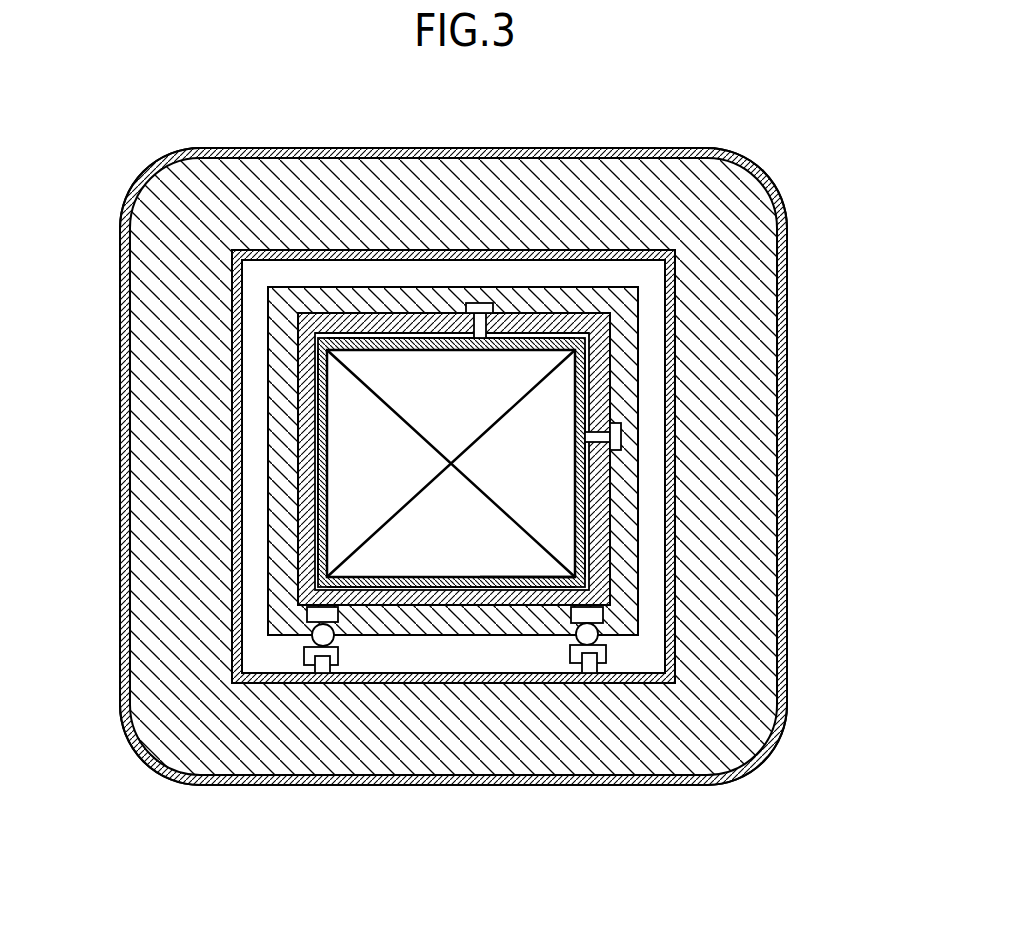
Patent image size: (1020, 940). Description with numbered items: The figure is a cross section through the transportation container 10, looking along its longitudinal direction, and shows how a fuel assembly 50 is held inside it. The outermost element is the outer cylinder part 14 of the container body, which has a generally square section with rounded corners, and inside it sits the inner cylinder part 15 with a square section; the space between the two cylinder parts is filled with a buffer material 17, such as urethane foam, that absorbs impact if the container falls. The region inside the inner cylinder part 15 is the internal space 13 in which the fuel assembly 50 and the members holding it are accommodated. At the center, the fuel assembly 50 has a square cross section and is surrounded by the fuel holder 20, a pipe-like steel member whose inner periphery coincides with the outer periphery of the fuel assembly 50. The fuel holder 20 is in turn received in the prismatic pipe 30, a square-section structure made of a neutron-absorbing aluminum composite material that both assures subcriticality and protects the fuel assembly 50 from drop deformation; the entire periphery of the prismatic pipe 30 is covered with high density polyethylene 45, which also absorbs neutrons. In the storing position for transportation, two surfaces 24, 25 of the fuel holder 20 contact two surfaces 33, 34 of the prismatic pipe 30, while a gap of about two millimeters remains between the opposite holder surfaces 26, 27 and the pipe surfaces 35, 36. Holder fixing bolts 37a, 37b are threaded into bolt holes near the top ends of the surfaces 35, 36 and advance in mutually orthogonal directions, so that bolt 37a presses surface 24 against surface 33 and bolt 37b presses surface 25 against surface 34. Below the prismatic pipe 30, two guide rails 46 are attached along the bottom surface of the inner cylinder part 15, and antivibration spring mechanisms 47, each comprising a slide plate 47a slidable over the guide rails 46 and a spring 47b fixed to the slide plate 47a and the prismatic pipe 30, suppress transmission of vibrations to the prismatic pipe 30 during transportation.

The transportation container 10 is at (456, 924).
The internal space 13 is at (580, 272).
The outer cylinder part 14 is at (235, 147).
The inner cylinder part 15 is at (309, 248).
The buffer material 17 is at (155, 658).
The fuel holder 20 is at (613, 528).
The surface 24 is at (409, 587).
The surface 25 is at (323, 486).
The surface 26 is at (402, 340).
The surface 27 is at (577, 413).
The prismatic pipe 30 is at (612, 500).
The surface 33 is at (496, 578).
The surface 34 is at (312, 440).
The surface 35 is at (450, 337).
The surface 36 is at (610, 458).
The holder fixing bolt 37a is at (479, 303).
The holder fixing bolt 37b is at (621, 431).
The high density polyethylene 45 is at (275, 347).
The guide rails 46 is at (323, 663).
The antivibration spring mechanism 47 is at (515, 735).
The slide plate 47a is at (338, 657).
The spring 47b is at (336, 640).
The fuel assembly 50 is at (543, 563).